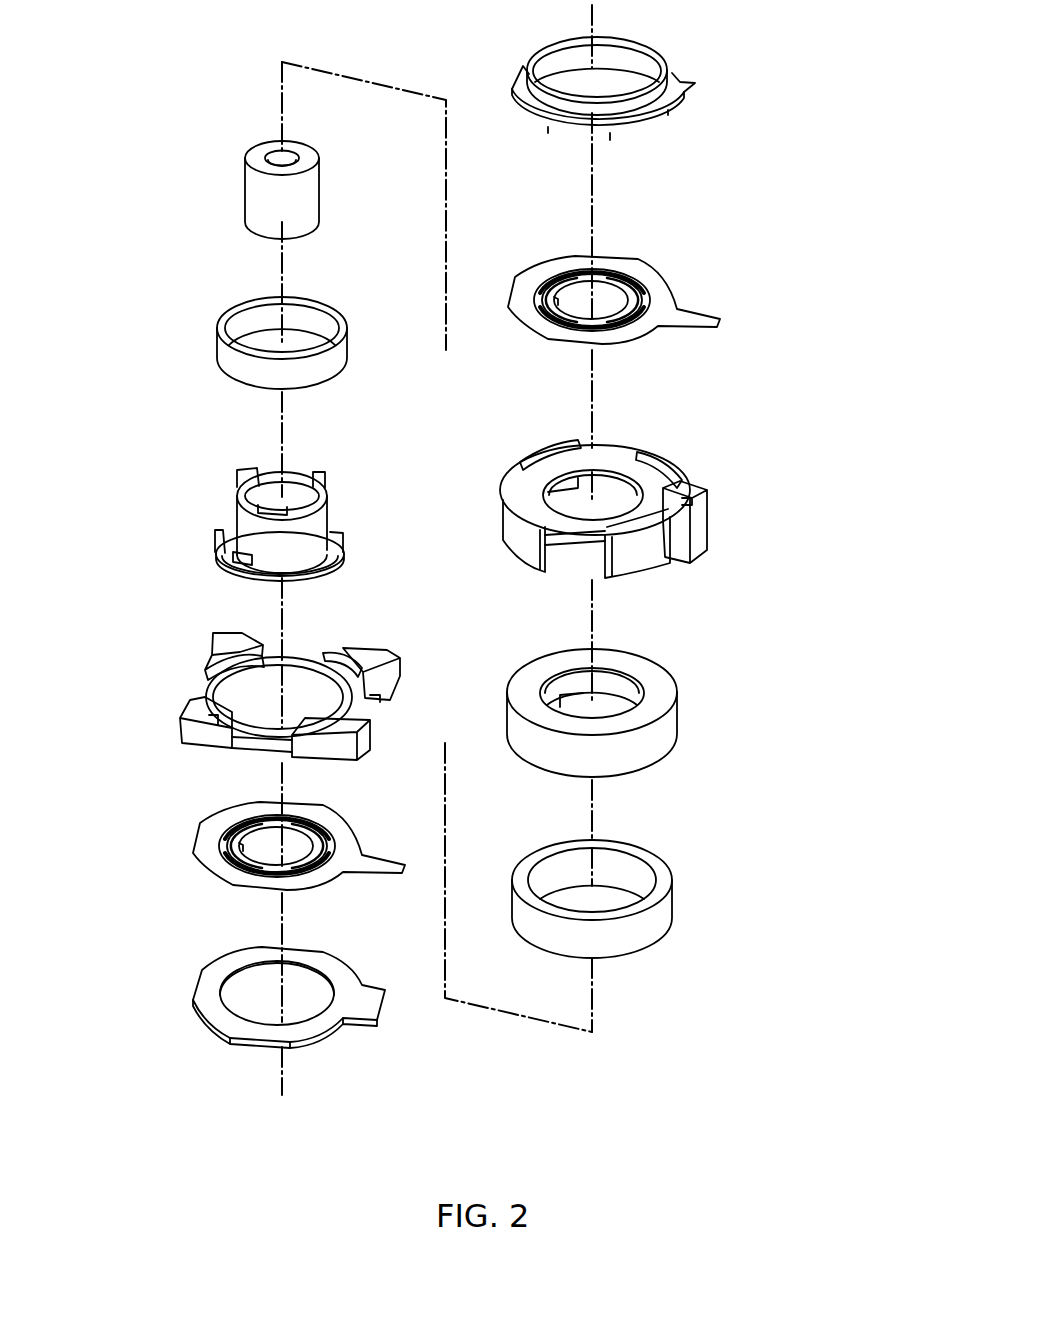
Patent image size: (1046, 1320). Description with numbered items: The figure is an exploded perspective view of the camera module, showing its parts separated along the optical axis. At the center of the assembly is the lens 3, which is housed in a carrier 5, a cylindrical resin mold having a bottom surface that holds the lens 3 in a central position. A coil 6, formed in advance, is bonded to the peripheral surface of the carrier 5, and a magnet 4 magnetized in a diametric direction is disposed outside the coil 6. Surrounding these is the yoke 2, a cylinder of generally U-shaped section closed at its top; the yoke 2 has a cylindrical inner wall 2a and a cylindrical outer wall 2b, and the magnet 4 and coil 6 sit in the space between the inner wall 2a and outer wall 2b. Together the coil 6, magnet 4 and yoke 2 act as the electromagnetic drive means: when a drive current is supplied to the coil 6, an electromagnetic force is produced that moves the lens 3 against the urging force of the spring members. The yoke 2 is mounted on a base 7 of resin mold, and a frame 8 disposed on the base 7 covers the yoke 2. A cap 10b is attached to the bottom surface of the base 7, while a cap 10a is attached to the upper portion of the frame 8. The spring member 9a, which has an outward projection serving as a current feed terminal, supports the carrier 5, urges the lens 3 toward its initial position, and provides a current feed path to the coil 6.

The yoke 2 is at (662, 678).
The inner wall 2a is at (615, 687).
The outer wall 2b is at (662, 735).
The lens 3 is at (257, 192).
The magnet 4 is at (655, 915).
The carrier 5 is at (243, 530).
The coil 6 is at (233, 363).
The base 7 is at (203, 687).
The frame 8 is at (650, 480).
The spring member 9a is at (770, 283).
The cap 10a is at (675, 93).
The cap 10b is at (207, 988).